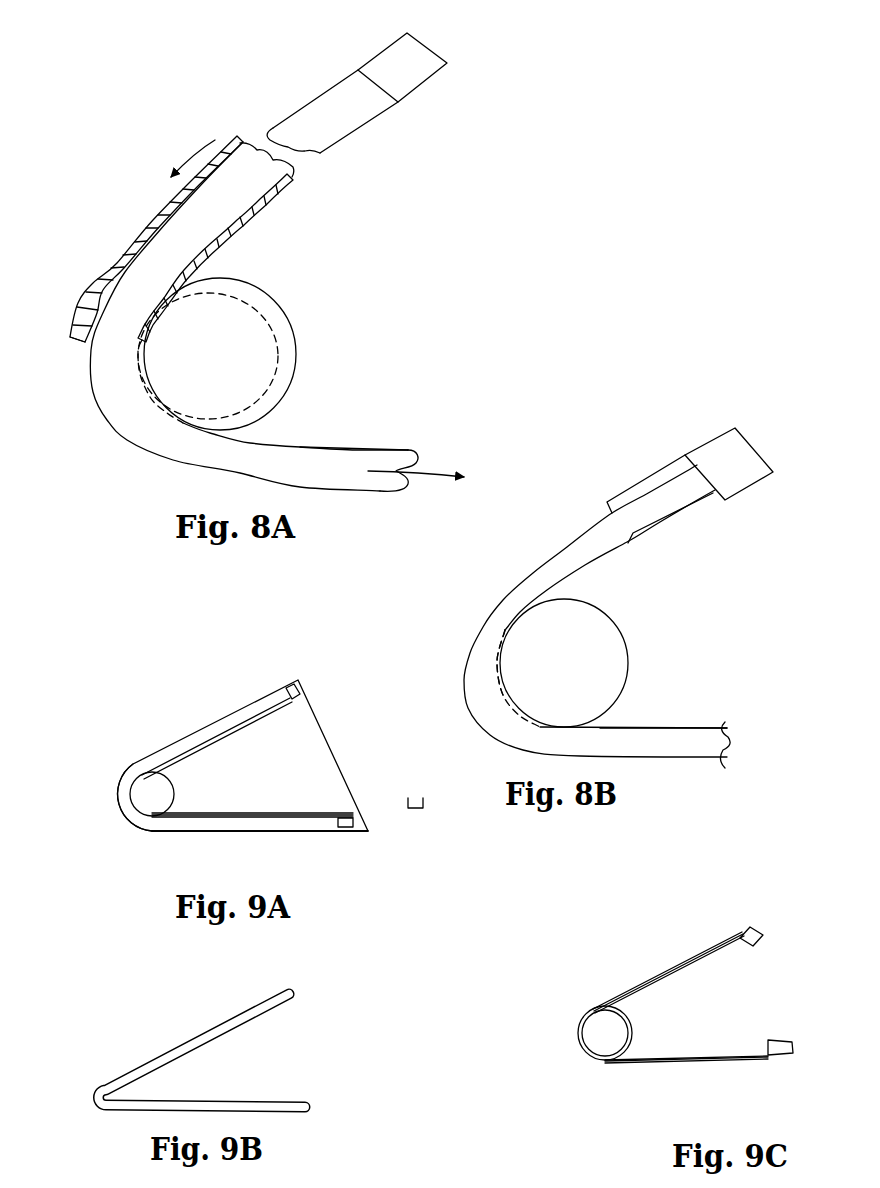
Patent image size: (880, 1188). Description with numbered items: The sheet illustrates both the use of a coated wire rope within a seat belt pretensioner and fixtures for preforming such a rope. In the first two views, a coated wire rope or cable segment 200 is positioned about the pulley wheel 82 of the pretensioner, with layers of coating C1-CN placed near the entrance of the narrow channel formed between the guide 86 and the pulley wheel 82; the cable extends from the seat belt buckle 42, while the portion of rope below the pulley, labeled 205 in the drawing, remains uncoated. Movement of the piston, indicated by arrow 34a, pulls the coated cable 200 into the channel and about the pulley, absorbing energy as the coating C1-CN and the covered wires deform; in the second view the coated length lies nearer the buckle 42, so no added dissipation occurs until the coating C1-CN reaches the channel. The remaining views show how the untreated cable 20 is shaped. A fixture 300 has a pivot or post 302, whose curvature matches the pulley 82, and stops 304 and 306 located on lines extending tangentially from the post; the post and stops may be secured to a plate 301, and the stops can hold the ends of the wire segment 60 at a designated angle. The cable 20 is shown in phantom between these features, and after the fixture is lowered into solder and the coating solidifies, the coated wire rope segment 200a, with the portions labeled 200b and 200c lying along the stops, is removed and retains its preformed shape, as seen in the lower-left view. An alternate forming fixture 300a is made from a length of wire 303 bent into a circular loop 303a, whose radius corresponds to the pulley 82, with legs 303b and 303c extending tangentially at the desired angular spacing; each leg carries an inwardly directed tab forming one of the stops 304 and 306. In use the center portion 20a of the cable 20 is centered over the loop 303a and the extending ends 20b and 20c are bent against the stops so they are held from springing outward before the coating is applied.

In FIG. 8A, the seat belt buckle 42 is at (407, 75).
In FIG. 8B, the seat belt buckle 42 is at (748, 472).
In FIG. 8A, the coated wire rope segment 200 is at (186, 226).
In FIG. 8B, the coated wire rope segment 200 is at (652, 508).
In FIG. 8A, the layers of coating C1-CN is at (101, 276).
In FIG. 8B, the layers of coating C1-CN is at (624, 494).
In FIG. 8A, the guide 86 is at (92, 286).
In FIG. 8A, the pulley wheel 82 is at (265, 350).
In FIG. 8B, the pulley wheel 82 is at (585, 660).
In FIG. 8A, the tube distal segment 205 is at (308, 460).
In FIG. 8B, the tube distal segment 205 is at (688, 743).
In FIG. 8A, the arrow 34a is at (433, 468).
In FIG. 9A, the fixture 300 is at (160, 732).
In FIG. 9A, the wire segment 60 is at (124, 754).
In FIG. 9A, the post 302 is at (152, 795).
In FIG. 9A, the upper sheath portion 200b is at (247, 720).
In FIG. 9A, the stop 304 is at (291, 684).
In FIG. 9C, the stop 304 is at (745, 930).
In FIG. 9A, the lower sheath portion 200c is at (248, 812).
In FIG. 9A, the cable 20 is at (290, 805).
In FIG. 9A, the stop 306 is at (345, 827).
In FIG. 9C, the stop 306 is at (782, 1053).
In FIG. 9A, the plate 301 is at (292, 823).
In FIG. 9A, the coated wire rope segment 200a is at (125, 810).
In FIG. 9B, the coated wire rope segment 200a is at (259, 1020).
In FIG. 9B, the extending end of the cable 20b is at (187, 1032).
In FIG. 9C, the extending end of the cable 20b is at (677, 970).
In FIG. 9B, the extending end of the cable 20c is at (237, 1110).
In FIG. 9C, the extending end of the cable 20c is at (697, 1057).
In FIG. 9B, the center portion of the cable 20a is at (90, 1090).
In FIG. 9C, the center portion of the cable 20a is at (597, 1045).
In FIG. 9C, the wire 303 is at (623, 980).
In FIG. 9C, the leg 303b is at (657, 977).
In FIG. 9C, the circular loop 303a is at (588, 1053).
In FIG. 9C, the leg 303c is at (668, 1065).
In FIG. 9C, the forming fixture 300a is at (750, 1015).